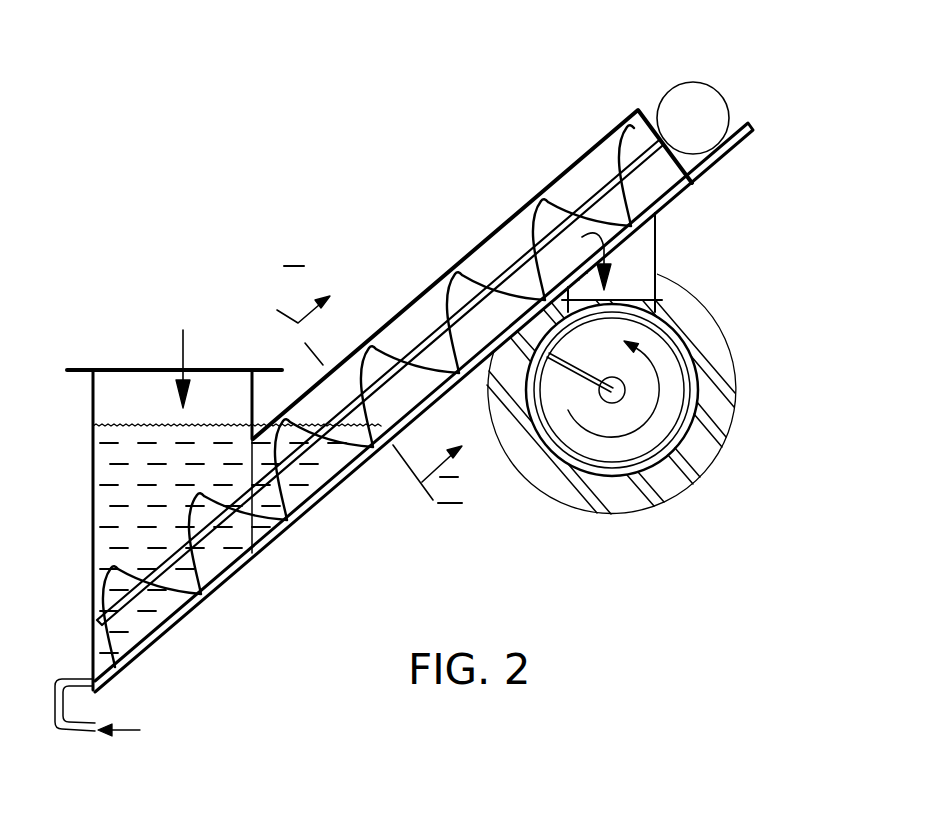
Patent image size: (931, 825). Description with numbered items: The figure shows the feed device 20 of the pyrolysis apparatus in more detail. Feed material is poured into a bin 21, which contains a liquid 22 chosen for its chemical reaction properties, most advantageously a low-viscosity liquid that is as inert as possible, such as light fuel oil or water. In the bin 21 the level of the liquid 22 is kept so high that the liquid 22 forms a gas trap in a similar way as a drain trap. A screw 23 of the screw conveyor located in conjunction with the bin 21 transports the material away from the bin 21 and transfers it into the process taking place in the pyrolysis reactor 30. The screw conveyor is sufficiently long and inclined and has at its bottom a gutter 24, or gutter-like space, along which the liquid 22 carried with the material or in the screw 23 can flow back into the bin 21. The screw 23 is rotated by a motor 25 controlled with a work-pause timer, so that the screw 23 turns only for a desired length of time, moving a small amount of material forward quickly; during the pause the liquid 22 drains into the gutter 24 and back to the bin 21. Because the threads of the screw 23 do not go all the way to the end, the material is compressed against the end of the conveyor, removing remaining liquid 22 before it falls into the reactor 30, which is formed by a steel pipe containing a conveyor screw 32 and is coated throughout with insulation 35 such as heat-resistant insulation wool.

The feed device 20 is at (424, 401).
The bin 21 is at (118, 383).
The liquid 22 is at (122, 478).
The screw 23 is at (318, 498).
The gutter 24 is at (230, 578).
The motor 25 is at (695, 82).
The pyrolysis reactor 30 is at (640, 410).
The conveyor screw 32 is at (672, 357).
The insulation 35 is at (725, 372).